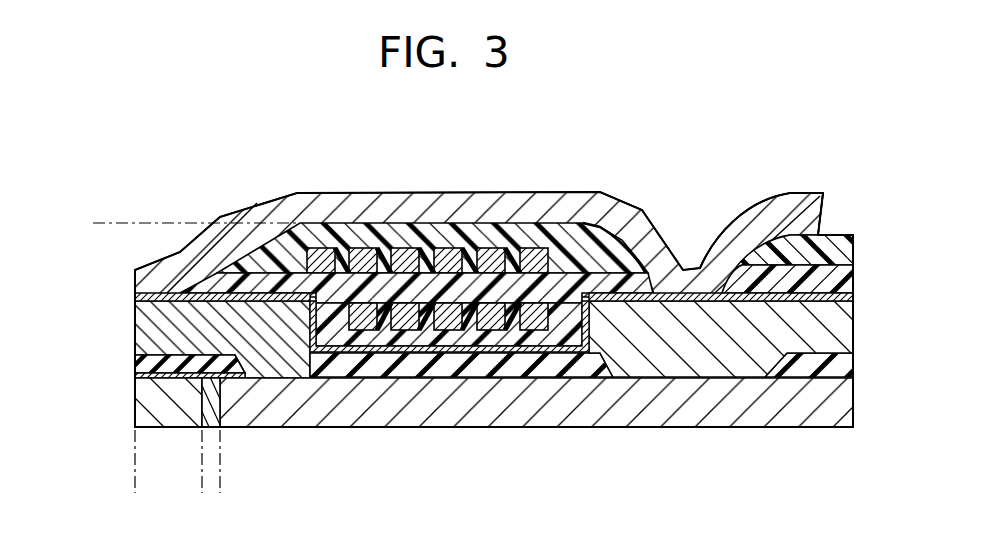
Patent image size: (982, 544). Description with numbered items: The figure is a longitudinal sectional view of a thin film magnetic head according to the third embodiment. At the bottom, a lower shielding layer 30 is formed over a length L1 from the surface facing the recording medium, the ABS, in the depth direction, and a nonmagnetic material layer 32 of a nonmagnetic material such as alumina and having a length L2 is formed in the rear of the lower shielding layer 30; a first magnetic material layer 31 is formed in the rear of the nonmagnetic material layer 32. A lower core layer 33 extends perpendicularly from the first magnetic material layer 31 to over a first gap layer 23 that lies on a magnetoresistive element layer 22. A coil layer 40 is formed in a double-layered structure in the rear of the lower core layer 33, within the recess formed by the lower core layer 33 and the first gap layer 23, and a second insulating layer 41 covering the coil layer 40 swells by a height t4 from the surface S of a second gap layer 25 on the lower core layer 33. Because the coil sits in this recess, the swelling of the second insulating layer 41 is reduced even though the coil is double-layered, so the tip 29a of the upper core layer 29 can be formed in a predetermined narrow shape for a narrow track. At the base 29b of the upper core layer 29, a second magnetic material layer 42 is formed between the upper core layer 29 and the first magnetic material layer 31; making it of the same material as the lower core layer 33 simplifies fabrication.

The magnetoresistive element layer 22 is at (165, 370).
The first gap layer 23 is at (190, 360).
The second gap layer 25 is at (492, 350).
The upper core layer 29 is at (479, 221).
The tip of the upper core layer 29a is at (168, 276).
The base of the upper core layer 29b is at (703, 268).
The lower shielding layer 30 is at (165, 405).
The first magnetic material layer 31 is at (383, 410).
The nonmagnetic material layer 32 is at (210, 407).
The lower core layer 33 is at (280, 353).
The coil layer 40 is at (538, 297).
The second insulating layer 41 is at (383, 287).
The second magnetic material layer 42 is at (720, 350).
The surface facing a recording medium ABS is at (135, 408).
The height of the swelling t4 is at (105, 224).
The surface of the second gap layer S is at (130, 293).
The length of the lower shielding layer L1 is at (202, 485).
The length of the nonmagnetic material layer L2 is at (242, 485).